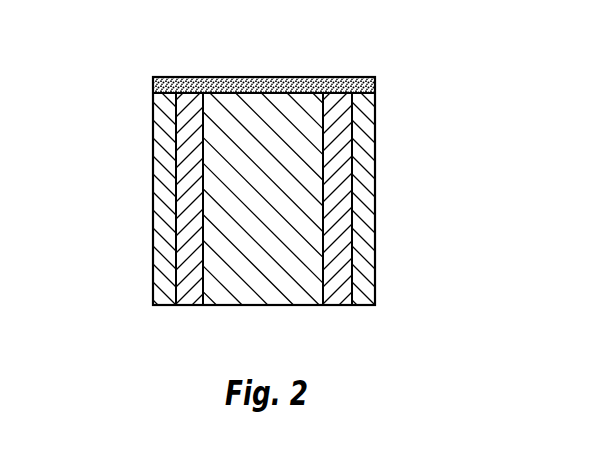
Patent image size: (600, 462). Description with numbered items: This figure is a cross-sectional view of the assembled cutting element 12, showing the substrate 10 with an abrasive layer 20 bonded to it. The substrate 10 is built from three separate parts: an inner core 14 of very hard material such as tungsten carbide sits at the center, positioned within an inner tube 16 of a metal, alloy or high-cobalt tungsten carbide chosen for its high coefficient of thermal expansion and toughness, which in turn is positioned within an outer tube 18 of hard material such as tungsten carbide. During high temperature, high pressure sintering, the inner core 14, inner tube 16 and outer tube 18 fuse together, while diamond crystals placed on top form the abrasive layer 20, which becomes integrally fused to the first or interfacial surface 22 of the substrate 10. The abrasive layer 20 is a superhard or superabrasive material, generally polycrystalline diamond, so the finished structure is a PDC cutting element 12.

The substrate 10 is at (130, 137).
The cutting element 12 is at (388, 74).
The inner core 14 is at (263, 272).
The inner tube 16 is at (187, 224).
The outer tube 18 is at (160, 156).
The abrasive layer 20 is at (248, 77).
The interfacial surface 22 is at (226, 89).